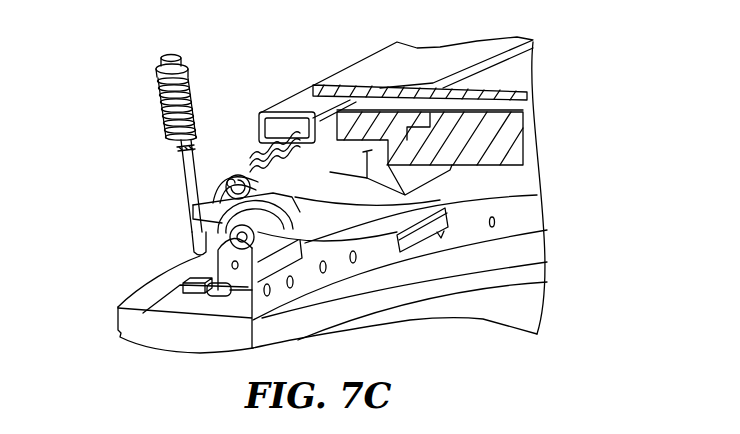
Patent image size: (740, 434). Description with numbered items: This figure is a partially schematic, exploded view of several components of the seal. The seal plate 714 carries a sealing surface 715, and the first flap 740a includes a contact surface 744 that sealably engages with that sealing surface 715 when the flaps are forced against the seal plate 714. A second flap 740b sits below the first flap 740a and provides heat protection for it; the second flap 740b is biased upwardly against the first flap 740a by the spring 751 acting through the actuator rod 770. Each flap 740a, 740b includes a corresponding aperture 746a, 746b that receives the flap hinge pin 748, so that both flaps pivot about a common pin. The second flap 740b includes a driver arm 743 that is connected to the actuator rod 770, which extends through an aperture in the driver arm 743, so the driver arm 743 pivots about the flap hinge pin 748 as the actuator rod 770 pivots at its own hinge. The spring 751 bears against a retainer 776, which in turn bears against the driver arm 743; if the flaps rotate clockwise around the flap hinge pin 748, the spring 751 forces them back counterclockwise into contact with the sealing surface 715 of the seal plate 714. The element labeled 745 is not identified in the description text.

The seal plate 714 is at (400, 168).
The sealing surface 715 is at (500, 168).
The first flap 740a is at (242, 151).
The second flap 740b is at (407, 240).
The driver arm 743 is at (233, 243).
The contact surface 744 is at (422, 167).
The rail 745 is at (287, 258).
The aperture 746a is at (257, 192).
The aperture 746b is at (267, 237).
The flap hinge pin 748 is at (235, 250).
The spring 751 is at (168, 100).
The actuator rod 770 is at (193, 207).
The retainer 776 is at (180, 150).